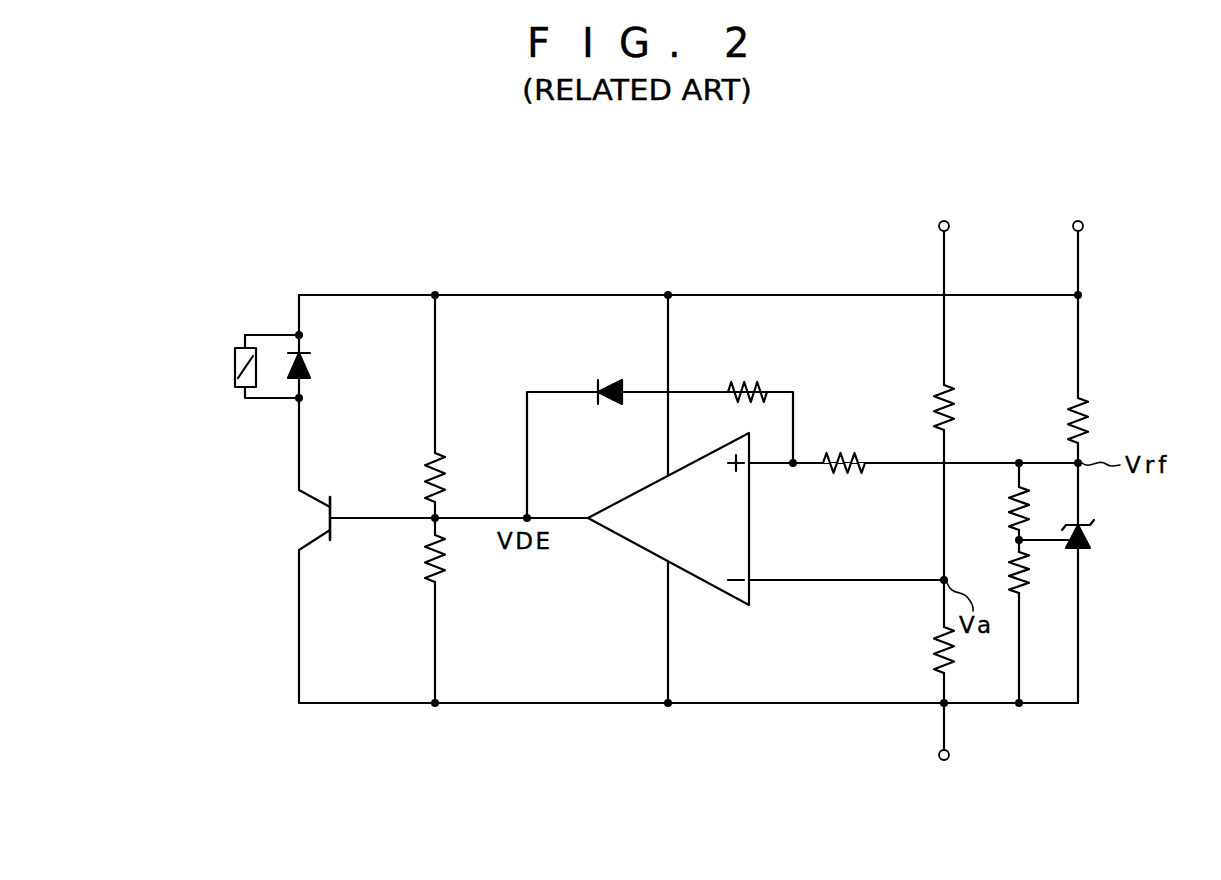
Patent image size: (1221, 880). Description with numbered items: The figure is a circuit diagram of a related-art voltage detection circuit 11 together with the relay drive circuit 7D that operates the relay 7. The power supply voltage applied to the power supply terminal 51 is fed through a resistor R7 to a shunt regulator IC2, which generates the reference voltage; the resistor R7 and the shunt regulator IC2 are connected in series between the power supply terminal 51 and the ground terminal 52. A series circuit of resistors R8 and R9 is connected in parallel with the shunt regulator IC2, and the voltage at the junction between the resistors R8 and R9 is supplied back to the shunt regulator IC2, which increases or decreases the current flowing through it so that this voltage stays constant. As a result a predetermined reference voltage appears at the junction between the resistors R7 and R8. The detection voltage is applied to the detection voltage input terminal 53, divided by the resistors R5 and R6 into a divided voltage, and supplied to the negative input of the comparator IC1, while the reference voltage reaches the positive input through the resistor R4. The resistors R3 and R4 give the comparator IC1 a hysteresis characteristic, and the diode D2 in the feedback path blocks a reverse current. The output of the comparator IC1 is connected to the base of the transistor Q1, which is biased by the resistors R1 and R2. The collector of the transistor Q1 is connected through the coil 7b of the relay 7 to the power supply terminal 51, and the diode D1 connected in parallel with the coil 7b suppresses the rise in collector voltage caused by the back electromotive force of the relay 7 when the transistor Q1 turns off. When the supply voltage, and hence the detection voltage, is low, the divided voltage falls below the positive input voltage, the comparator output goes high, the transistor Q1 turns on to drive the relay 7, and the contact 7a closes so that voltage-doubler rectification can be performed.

The relay 7 is at (217, 314).
The contact 7a is at (180, 293).
The coil 7b is at (240, 388).
The relay drive circuit 7D is at (350, 709).
The voltage detection circuit 11 is at (776, 718).
The power supply terminal 51 is at (1083, 230).
The ground terminal 52 is at (944, 762).
The detection voltage input terminal 53 is at (949, 230).
The diode D1 is at (321, 366).
The diode D2 is at (609, 377).
The transistor Q1 is at (295, 520).
The resistor R1 is at (411, 406).
The resistor R2 is at (411, 610).
The resistor R3 is at (748, 376).
The resistor R4 is at (844, 450).
The resistor R5 is at (919, 407).
The resistor R6 is at (919, 650).
The resistor R7 is at (1054, 420).
The resistor R8 is at (994, 496).
The resistor R9 is at (994, 616).
The comparator IC1 is at (696, 519).
The shunt regulator IC2 is at (1103, 537).